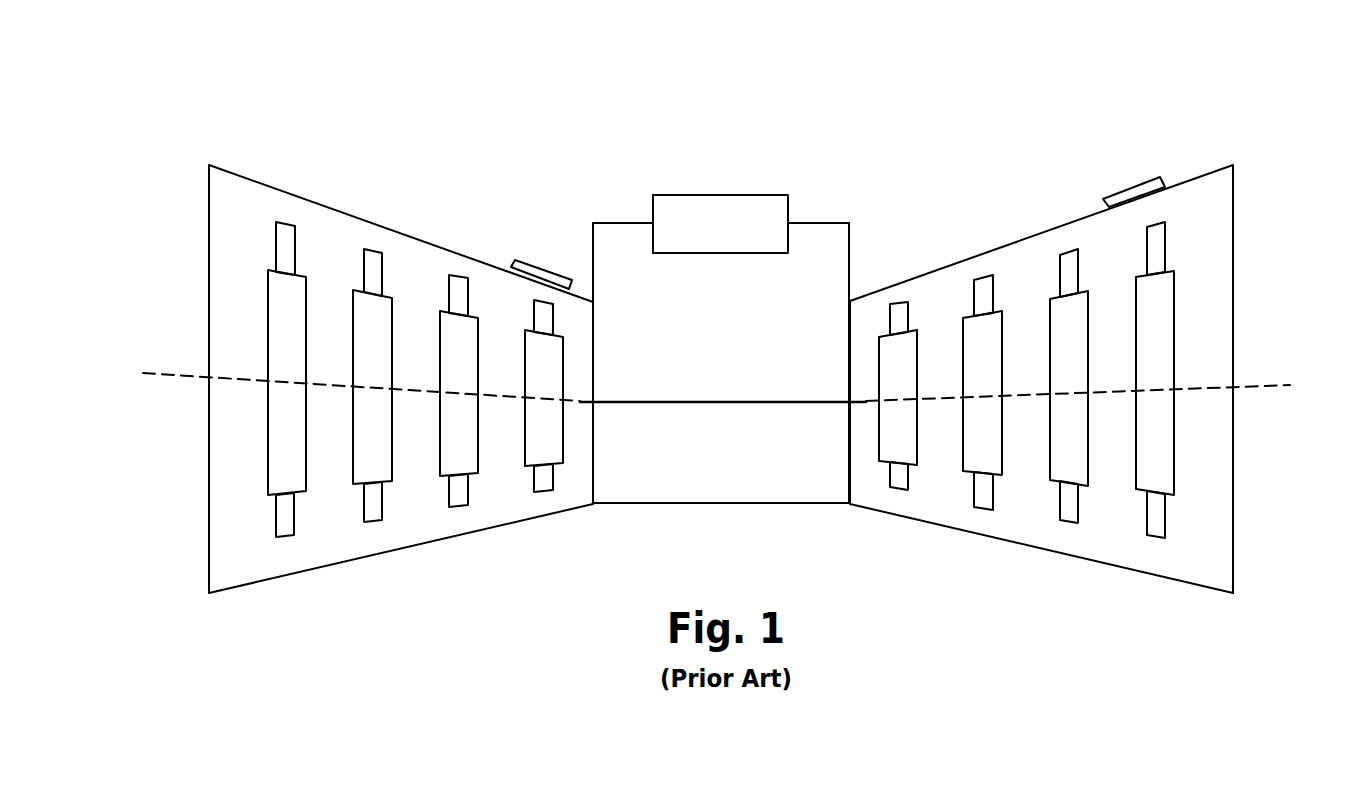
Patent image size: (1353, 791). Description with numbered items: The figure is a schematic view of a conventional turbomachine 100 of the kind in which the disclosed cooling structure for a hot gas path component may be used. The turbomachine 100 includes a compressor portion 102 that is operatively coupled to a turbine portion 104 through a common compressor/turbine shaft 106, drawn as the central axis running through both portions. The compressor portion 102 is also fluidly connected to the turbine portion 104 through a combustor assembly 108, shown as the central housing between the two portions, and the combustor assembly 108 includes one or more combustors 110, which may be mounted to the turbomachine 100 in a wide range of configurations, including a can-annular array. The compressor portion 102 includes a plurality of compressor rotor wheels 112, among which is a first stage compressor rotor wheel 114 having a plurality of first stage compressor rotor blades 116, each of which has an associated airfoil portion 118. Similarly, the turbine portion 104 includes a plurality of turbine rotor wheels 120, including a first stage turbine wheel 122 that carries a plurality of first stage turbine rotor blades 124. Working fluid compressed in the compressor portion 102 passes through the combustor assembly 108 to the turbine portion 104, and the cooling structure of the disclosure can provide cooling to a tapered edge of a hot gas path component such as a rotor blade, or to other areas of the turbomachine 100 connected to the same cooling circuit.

The turbomachine 100 is at (402, 148).
The compressor portion 102 is at (248, 595).
The turbine portion 104 is at (1128, 589).
The common compressor/turbine shaft 106 is at (717, 403).
The combustor assembly 108 is at (652, 177).
The combustor 110 is at (720, 195).
The compressor rotor wheels 112 is at (325, 527).
The first stage compressor rotor wheel 114 is at (279, 466).
The first stage compressor rotor blades 116 is at (267, 535).
The airfoil portion 118 is at (285, 538).
The turbine rotor wheels 120 is at (1177, 518).
The first stage turbine wheel 122 is at (913, 467).
The first stage turbine rotor blades 124 is at (898, 302).